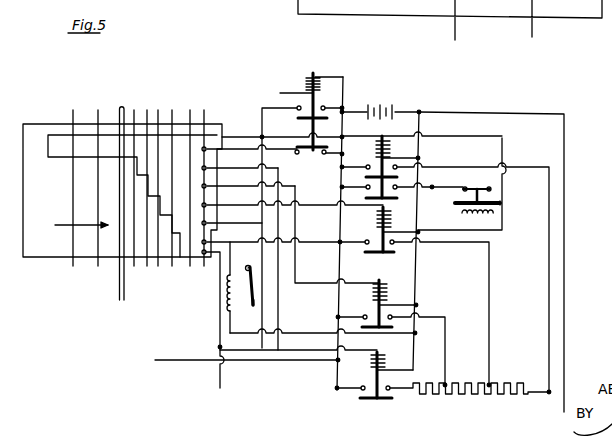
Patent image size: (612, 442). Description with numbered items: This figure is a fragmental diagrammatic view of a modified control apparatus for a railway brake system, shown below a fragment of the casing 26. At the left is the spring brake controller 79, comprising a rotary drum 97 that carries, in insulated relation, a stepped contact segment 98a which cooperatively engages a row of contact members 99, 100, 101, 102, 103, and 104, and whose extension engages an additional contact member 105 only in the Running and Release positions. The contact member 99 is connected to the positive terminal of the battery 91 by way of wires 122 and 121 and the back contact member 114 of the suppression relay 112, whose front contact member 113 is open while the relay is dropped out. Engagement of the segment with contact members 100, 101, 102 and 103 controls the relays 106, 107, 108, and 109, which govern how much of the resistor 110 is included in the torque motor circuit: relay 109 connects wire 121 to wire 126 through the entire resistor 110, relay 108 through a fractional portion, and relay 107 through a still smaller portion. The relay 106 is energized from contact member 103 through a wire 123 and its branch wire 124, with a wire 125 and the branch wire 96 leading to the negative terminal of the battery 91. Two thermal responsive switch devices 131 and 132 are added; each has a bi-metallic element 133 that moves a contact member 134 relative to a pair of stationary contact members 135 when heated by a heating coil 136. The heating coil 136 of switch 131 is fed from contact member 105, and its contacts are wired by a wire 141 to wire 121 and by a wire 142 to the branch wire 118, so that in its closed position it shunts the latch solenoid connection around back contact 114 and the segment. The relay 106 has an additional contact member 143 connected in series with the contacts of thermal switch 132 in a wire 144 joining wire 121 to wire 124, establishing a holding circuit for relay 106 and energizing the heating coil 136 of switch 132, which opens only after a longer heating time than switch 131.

The casing 26 is at (360, 12).
The spring brake controller 79 is at (50, 122).
The battery 91 is at (380, 103).
The branch wire 96 is at (498, 114).
The rotary drum 97 is at (33, 247).
The contact segment 98a is at (62, 150).
The contact member 99 is at (208, 149).
The contact member 100 is at (208, 168).
The contact member 101 is at (208, 186).
The contact member 102 is at (208, 205).
The contact member 103 is at (208, 223).
The contact member 104 is at (208, 242).
The additional contact member 105 is at (203, 258).
The relay 106 is at (383, 133).
The relay 107 is at (386, 213).
The relay 108 is at (379, 280).
The relay 109 is at (378, 352).
The resistor 110 is at (449, 391).
The suppression relay 112 is at (314, 73).
The front contact member 113 is at (300, 120).
The back contact member 114 is at (313, 151).
The branch wire 118 is at (218, 378).
The wire 121 is at (341, 182).
The wire 122 is at (352, 104).
The wire 123 is at (261, 108).
The branch wire 124 is at (316, 120).
The wire 125 is at (417, 272).
The wire 126 is at (548, 270).
The thermal responsive switch device 131 is at (232, 317).
The thermal responsive switch device 132 is at (498, 202).
The bi-metallic element 133 is at (492, 208).
The contact member 134 is at (493, 183).
The stationary contact members 135 is at (465, 187).
The heating coil 136 is at (480, 222).
The wire 141 is at (330, 243).
The wire 142 is at (238, 358).
The contact member 143 is at (366, 199).
The wire 144 is at (505, 165).